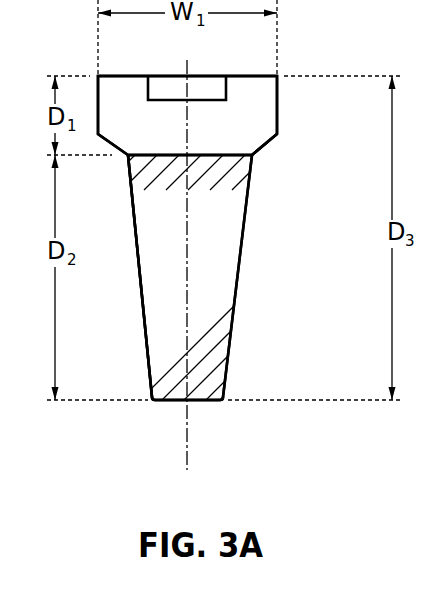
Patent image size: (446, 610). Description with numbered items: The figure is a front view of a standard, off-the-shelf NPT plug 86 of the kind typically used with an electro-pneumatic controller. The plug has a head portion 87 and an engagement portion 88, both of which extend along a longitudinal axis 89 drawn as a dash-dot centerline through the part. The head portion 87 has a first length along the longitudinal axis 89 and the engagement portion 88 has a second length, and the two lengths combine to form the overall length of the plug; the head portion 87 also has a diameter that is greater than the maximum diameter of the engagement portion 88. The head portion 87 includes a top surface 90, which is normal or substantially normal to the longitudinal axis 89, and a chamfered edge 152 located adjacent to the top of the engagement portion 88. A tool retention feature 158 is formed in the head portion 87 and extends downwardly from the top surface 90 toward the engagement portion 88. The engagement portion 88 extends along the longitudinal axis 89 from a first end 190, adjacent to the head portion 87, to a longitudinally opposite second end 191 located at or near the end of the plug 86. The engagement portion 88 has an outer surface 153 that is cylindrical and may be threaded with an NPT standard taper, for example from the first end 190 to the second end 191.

The standard NPT plug 86 is at (210, 58).
The head portion 87 is at (245, 107).
The engagement portion 88 is at (212, 386).
The longitudinal axis 89 is at (186, 433).
The top surface 90 is at (122, 75).
The chamfered edge 152 is at (262, 145).
The outer surface 153 is at (150, 364).
The tool retention feature 158 is at (226, 88).
The first end 190 is at (251, 157).
The second end 191 is at (223, 390).